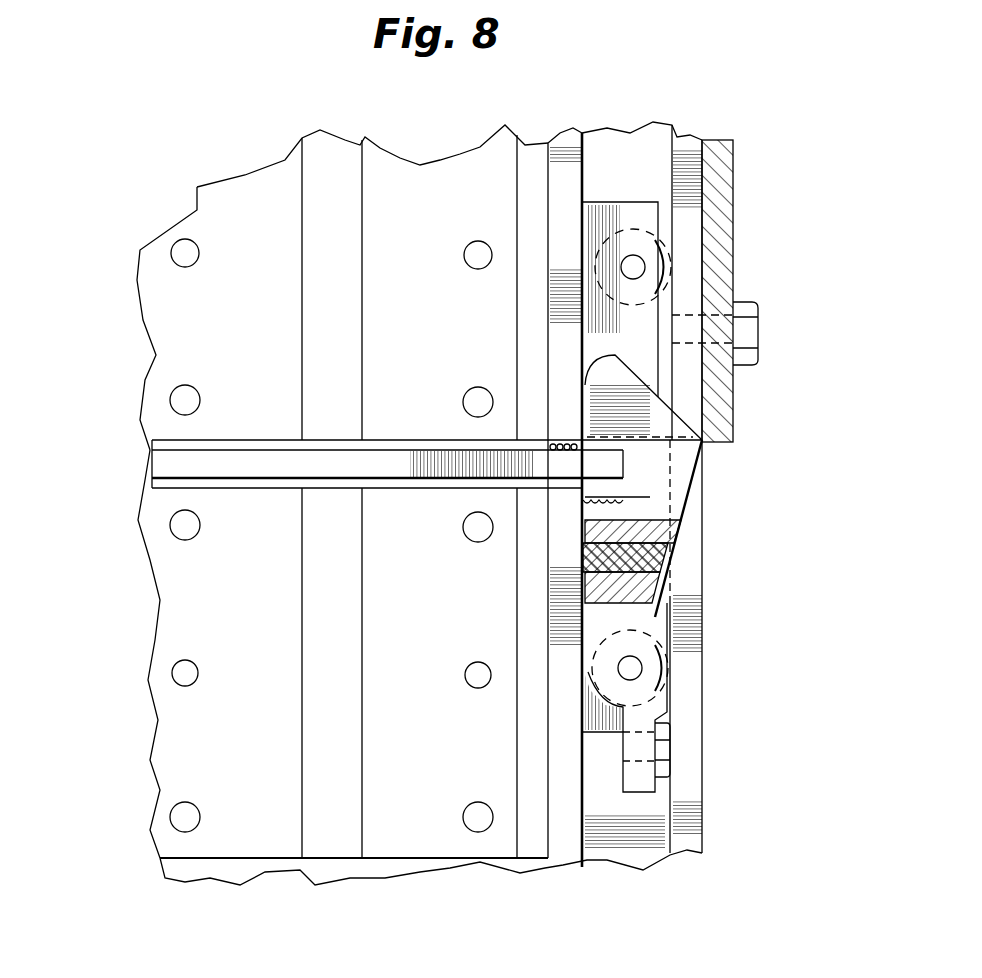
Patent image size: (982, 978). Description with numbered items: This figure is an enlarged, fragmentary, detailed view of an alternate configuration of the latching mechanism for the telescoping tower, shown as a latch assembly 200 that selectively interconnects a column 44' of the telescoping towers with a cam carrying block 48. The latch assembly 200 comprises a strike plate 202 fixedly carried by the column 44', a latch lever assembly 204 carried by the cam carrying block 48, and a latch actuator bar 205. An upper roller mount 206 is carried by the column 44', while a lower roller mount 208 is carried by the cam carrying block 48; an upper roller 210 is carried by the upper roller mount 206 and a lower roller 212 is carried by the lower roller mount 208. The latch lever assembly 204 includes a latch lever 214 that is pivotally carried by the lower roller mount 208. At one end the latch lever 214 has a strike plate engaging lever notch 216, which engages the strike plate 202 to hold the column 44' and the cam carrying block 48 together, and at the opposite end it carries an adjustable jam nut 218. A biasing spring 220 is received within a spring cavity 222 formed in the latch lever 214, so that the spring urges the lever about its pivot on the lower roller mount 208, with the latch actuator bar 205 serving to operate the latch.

The column 44' is at (368, 264).
The cam carrying block 48 is at (500, 780).
The latch assembly 200 is at (731, 491).
The strike plate 202 is at (217, 462).
The latch lever assembly 204 is at (718, 533).
The latch actuator bar 205 is at (722, 272).
The upper roller mount 206 is at (627, 213).
The lower roller mount 208 is at (665, 713).
The upper roller 210 is at (672, 243).
The lower roller 212 is at (702, 627).
The latch lever 214 is at (692, 448).
The strike plate engaging lever notch 216 is at (650, 497).
The adjustable jam nut 218 is at (665, 767).
The biasing spring 220 is at (548, 580).
The spring cavity 222 is at (672, 570).